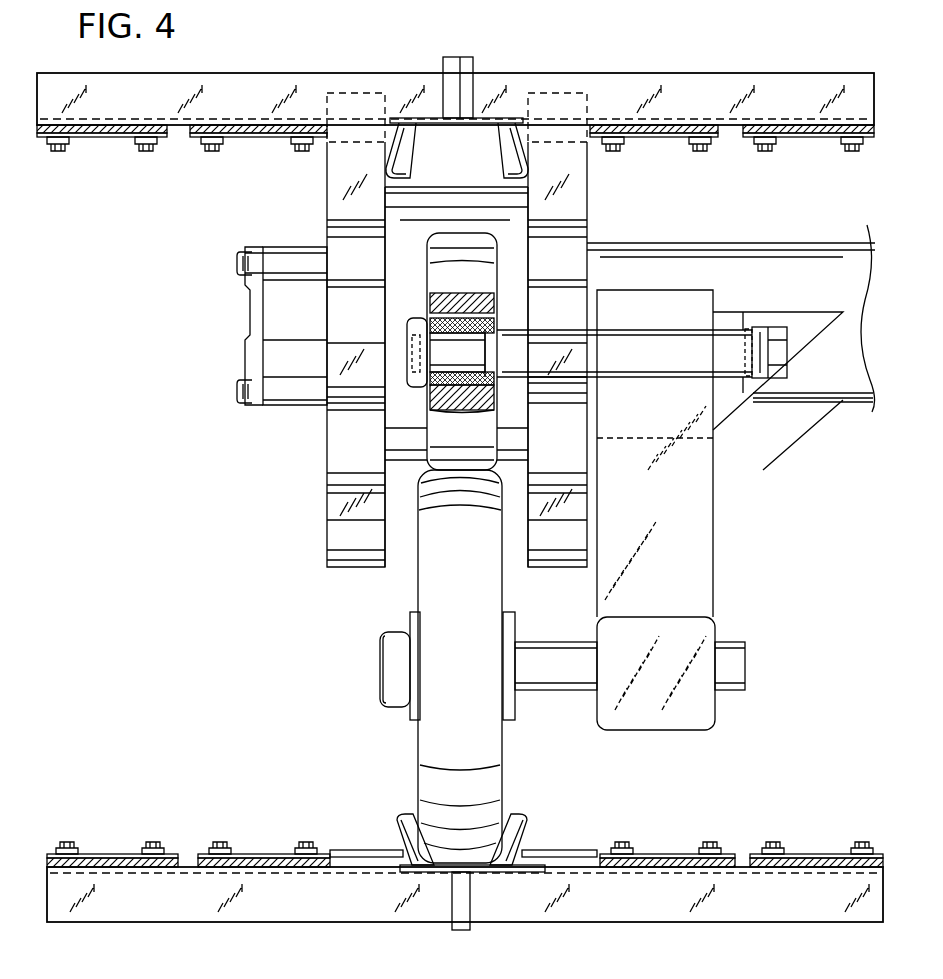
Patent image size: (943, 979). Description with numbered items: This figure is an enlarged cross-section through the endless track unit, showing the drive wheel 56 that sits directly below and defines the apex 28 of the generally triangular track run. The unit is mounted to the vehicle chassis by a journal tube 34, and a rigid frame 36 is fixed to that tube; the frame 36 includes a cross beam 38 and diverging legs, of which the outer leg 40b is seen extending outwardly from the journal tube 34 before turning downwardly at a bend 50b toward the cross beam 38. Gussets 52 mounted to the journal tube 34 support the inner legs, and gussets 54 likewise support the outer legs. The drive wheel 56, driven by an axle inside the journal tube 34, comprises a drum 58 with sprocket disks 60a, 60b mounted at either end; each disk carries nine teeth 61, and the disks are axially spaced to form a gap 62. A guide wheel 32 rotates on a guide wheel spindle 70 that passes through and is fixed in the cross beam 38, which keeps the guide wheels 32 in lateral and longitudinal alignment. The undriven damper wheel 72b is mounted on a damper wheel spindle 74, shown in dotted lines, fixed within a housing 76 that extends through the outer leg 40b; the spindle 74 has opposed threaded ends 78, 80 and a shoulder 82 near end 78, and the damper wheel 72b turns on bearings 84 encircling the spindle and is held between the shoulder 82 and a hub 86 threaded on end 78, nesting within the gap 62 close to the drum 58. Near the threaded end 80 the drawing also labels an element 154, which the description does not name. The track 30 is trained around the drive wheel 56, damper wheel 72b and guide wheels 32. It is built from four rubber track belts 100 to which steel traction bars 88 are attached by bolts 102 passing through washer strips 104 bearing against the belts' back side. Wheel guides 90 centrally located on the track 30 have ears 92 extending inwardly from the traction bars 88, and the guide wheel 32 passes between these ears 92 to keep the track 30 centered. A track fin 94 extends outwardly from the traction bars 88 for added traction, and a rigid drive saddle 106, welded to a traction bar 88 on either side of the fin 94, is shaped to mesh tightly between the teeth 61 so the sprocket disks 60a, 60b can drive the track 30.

The apex 28 is at (470, 64).
The track 30 is at (74, 152).
The guide wheels 32 is at (430, 755).
The journal tube 34 is at (797, 250).
The frame 36 is at (808, 572).
The cross beam 38 is at (700, 720).
The outer leg 40b is at (690, 588).
The bend 50b is at (713, 438).
The gussets 52 is at (825, 312).
The gussets 54 is at (790, 425).
The drive wheel 56 is at (300, 236).
The drum 58 is at (400, 240).
The sprocket disk 60a is at (353, 348).
The sprocket disk 60b is at (572, 208).
The teeth 61 is at (328, 550).
The gap 62 is at (400, 555).
The guide wheel spindles 70 is at (552, 675).
The damper wheel 72b is at (447, 443).
The damper wheel spindles 74 is at (692, 330).
The housing 76 is at (760, 325).
The threaded end 78 is at (400, 357).
The threaded end 80 is at (788, 340).
The shoulder 82 is at (490, 398).
The bearings 84 is at (490, 300).
The hub 86 is at (407, 330).
The traction bars 88 is at (225, 90).
The wheel guides 90 is at (520, 118).
The ears 92 is at (525, 827).
The track fin 94 is at (450, 920).
The track belts 100 is at (830, 870).
The bolts 102 is at (778, 850).
The washer strips 104 is at (845, 850).
The drive saddle 106 is at (372, 860).
The lock washer 154 is at (760, 335).